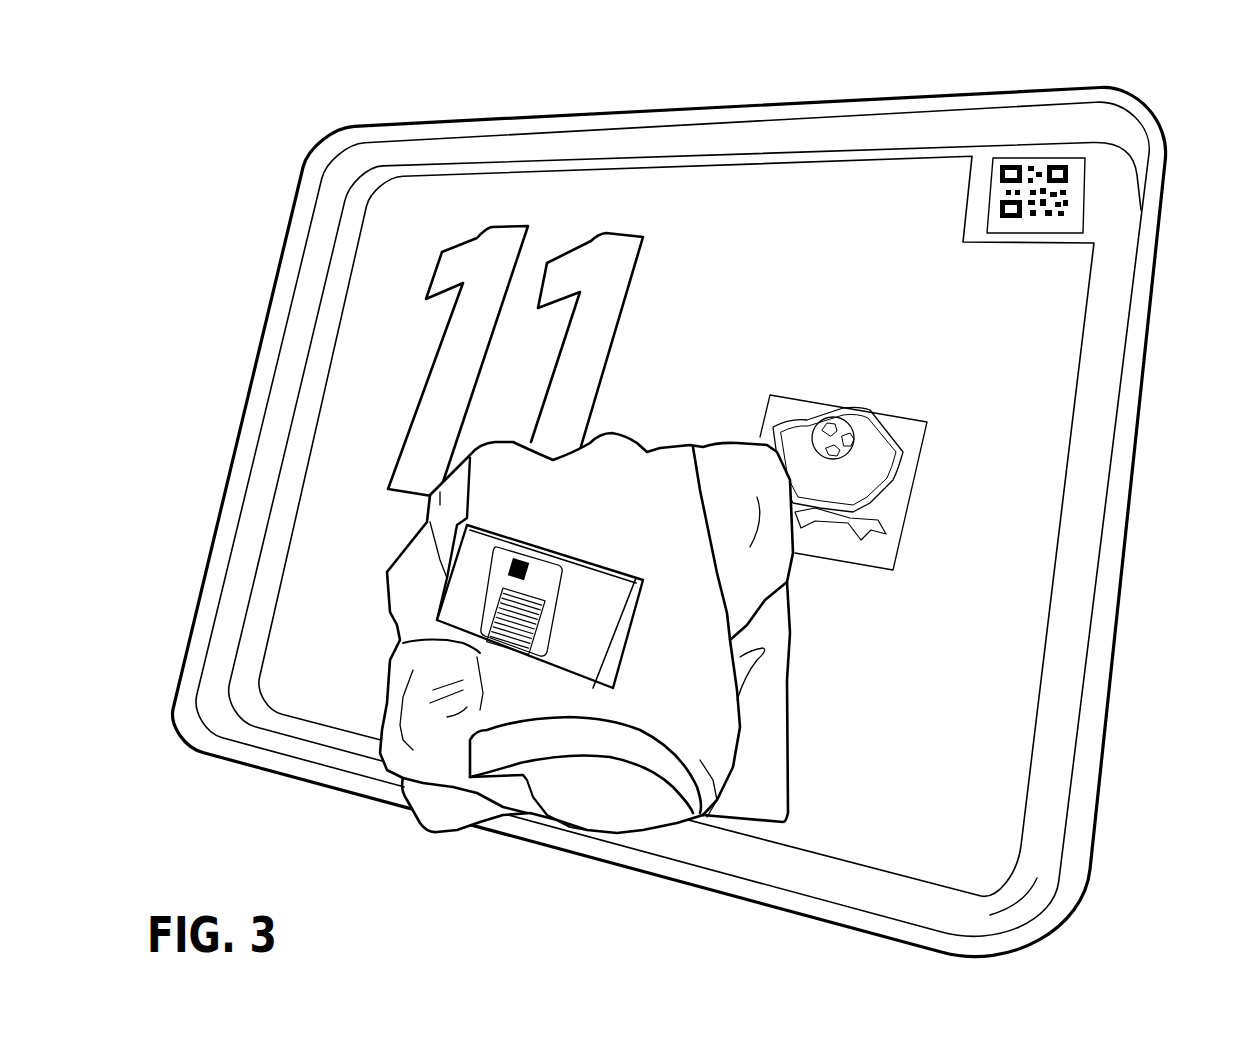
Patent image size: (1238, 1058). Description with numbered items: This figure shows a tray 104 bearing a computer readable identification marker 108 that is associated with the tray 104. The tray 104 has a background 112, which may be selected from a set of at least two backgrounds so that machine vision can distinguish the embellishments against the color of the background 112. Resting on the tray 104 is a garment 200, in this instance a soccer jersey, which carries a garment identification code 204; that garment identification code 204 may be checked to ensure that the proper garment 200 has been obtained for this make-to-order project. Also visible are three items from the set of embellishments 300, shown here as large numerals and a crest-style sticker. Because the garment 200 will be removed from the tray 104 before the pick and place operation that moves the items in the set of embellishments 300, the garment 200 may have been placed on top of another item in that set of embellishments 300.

The tray 104 is at (1053, 787).
The computer readable identification marker 108 is at (1075, 217).
The background 112 is at (1033, 412).
The garment 200 is at (757, 733).
The garment identification code 204 is at (617, 638).
The set of embellishments 300 is at (803, 393).